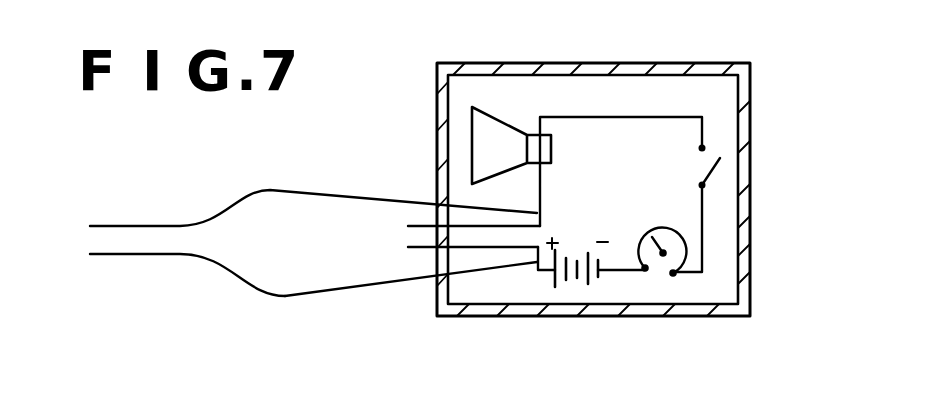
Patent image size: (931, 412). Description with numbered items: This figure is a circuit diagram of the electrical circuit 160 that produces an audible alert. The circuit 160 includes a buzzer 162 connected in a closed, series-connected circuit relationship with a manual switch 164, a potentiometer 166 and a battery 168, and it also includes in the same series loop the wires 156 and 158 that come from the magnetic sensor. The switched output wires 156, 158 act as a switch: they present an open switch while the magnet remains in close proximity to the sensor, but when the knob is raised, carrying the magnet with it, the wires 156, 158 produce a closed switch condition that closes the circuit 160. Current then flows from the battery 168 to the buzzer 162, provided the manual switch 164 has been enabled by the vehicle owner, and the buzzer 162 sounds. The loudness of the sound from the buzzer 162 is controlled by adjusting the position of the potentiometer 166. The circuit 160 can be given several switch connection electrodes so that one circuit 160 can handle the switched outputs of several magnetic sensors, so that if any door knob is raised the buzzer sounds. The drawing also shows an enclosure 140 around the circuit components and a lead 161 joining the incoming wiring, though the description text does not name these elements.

The housing 140 is at (740, 237).
The wire 156 is at (283, 188).
The wire 158 is at (302, 295).
The circuit 160 is at (417, 225).
The conductor wire 161 is at (417, 278).
The buzzer 162 is at (500, 140).
The manual switch 164 is at (635, 143).
The potentiometer 166 is at (680, 250).
The battery 168 is at (617, 318).